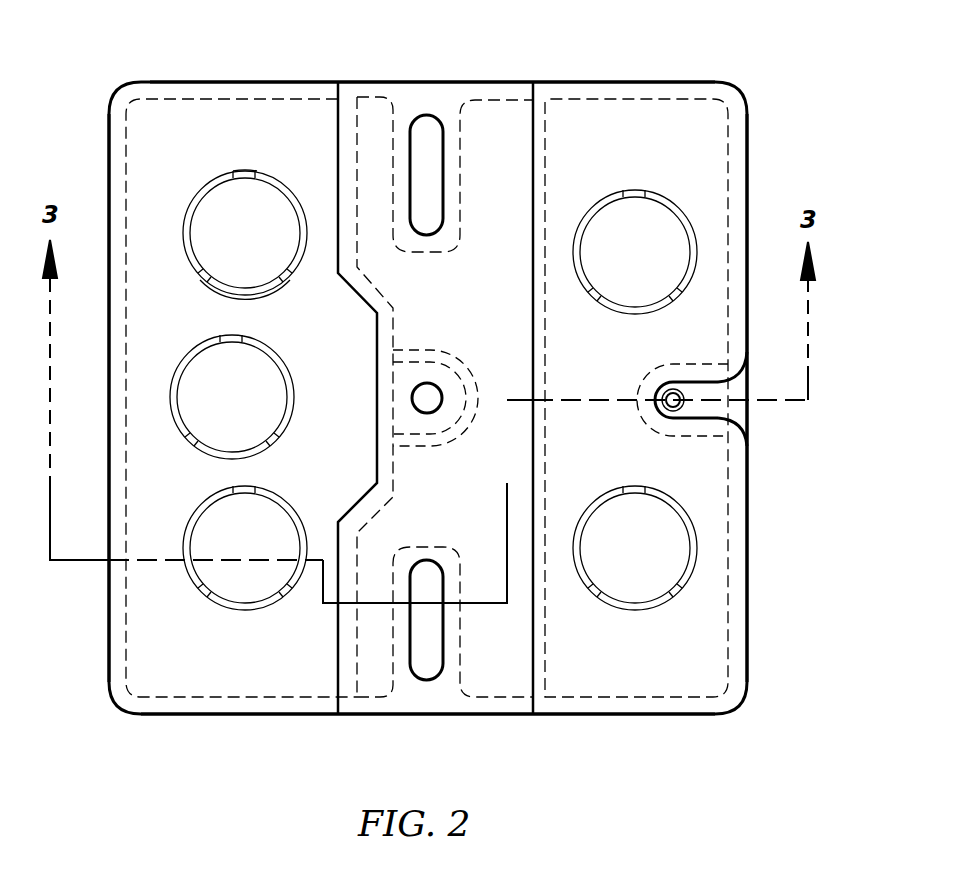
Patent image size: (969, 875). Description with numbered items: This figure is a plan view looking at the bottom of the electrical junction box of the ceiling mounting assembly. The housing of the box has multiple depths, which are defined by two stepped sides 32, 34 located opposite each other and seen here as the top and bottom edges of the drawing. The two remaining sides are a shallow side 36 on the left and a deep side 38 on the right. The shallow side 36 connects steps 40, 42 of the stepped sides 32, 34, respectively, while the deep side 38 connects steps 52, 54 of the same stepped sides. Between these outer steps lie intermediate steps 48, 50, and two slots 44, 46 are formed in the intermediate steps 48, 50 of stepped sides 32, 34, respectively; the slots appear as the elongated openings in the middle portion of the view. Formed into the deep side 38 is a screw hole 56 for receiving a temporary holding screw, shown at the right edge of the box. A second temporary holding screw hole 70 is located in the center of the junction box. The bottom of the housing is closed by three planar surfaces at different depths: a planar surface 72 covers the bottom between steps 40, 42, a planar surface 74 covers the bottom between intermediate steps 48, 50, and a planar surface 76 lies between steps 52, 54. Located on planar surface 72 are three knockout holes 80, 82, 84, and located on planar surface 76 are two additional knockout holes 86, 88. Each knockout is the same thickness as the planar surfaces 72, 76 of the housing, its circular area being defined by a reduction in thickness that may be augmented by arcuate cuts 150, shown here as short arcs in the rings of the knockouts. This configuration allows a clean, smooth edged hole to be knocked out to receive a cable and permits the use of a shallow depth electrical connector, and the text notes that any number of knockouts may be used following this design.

The stepped side 32 is at (560, 762).
The stepped side 34 is at (540, 61).
The shallow side 36 is at (109, 622).
The deep side 38 is at (747, 138).
The step 40 is at (190, 715).
The step 42 is at (200, 82).
The slot 44 is at (425, 627).
The slot 46 is at (428, 172).
The intermediate step 48 is at (448, 715).
The intermediate step 50 is at (438, 82).
The step 52 is at (645, 716).
The step 54 is at (658, 82).
The screw hole 56 is at (677, 407).
The temporary holding screw hole 70 is at (430, 373).
The planar surface 72 is at (336, 346).
The planar surface 74 is at (468, 311).
The planar surface 76 is at (613, 366).
The knockout hole 80 is at (245, 548).
The knockout hole 82 is at (232, 397).
The knockout hole 84 is at (245, 233).
The knockout hole 86 is at (635, 548).
The knockout hole 88 is at (635, 252).
The arcuate cuts 150 is at (272, 178).